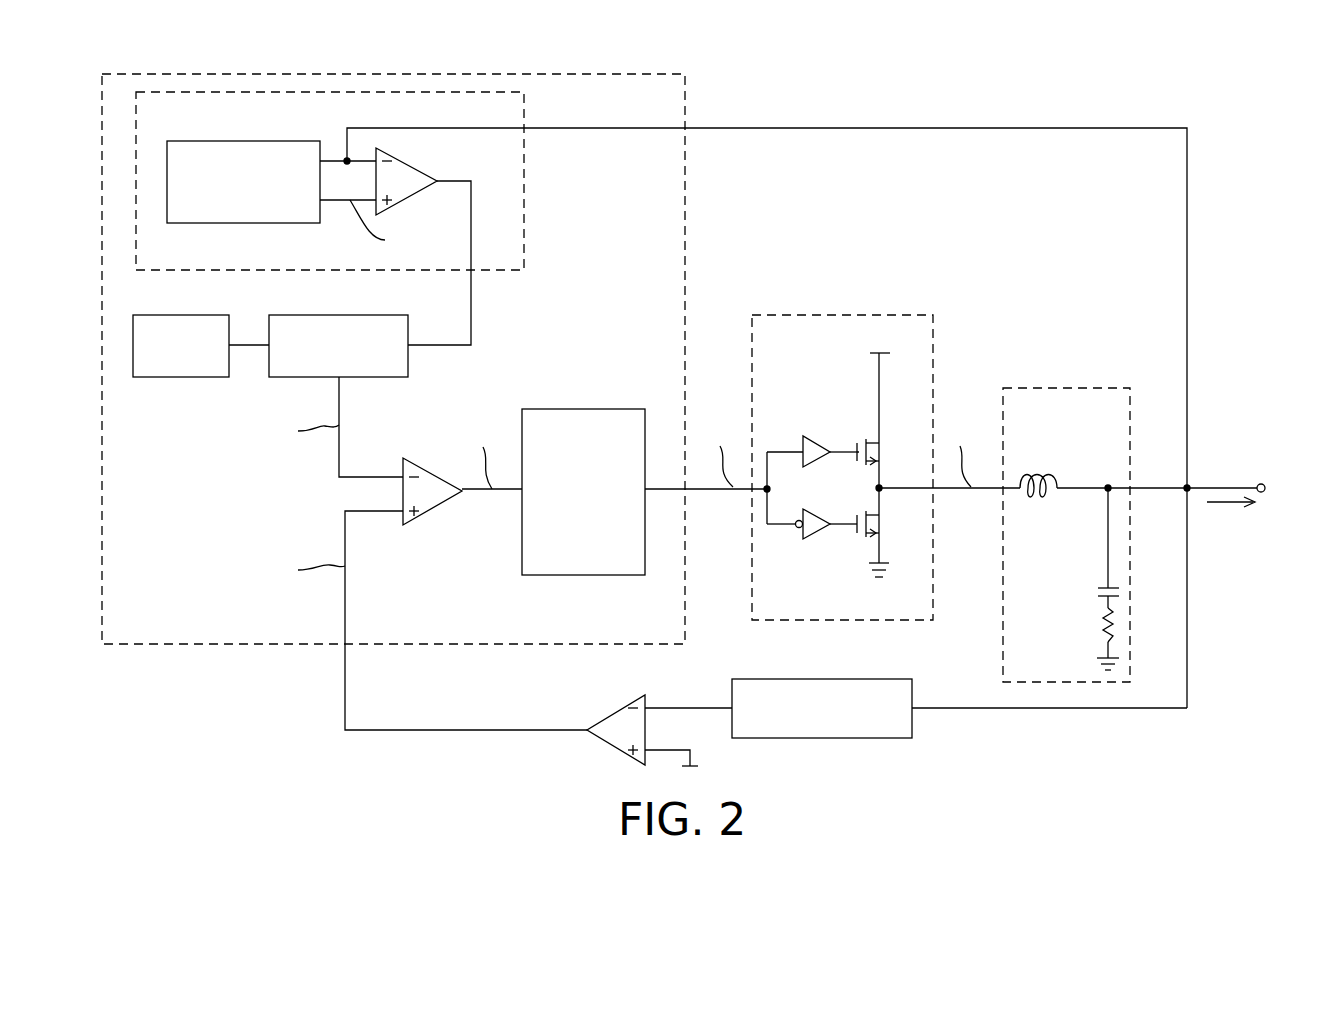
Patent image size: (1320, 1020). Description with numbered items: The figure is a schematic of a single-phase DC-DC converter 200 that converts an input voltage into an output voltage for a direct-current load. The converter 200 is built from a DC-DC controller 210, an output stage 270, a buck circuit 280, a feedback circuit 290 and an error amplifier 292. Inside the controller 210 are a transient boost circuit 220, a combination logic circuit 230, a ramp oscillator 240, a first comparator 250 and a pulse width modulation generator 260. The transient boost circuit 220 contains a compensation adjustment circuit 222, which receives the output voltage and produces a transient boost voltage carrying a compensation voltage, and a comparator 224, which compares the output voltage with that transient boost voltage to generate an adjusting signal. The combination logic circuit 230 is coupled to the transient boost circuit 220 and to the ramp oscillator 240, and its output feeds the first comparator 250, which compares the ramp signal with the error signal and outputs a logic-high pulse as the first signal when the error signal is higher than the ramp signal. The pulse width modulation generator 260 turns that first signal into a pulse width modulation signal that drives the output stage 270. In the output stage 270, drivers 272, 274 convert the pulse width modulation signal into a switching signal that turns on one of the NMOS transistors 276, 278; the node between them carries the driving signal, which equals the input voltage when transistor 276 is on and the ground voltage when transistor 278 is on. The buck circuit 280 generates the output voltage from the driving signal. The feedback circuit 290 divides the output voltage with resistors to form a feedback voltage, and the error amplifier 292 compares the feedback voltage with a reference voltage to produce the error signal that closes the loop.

The single-phase DC-DC converter 200 is at (1214, 775).
The DC-DC controller 210 is at (685, 100).
The transient boost circuit 220 is at (524, 160).
The compensation adjustment circuit 222 is at (222, 141).
The comparator 224 is at (400, 161).
The combination logic circuit 230 is at (322, 315).
The ramp oscillator 240 is at (170, 377).
The first comparator 250 is at (412, 458).
The pulse width modulation generator 260 is at (582, 409).
The output stage 270 is at (830, 315).
The driver 272 is at (812, 436).
The driver 274 is at (818, 540).
The NMOS transistor 276 is at (882, 452).
The NMOS transistor 278 is at (870, 531).
The buck circuit 280 is at (1057, 388).
The feedback circuit 290 is at (912, 720).
The error amplifier 292 is at (615, 708).